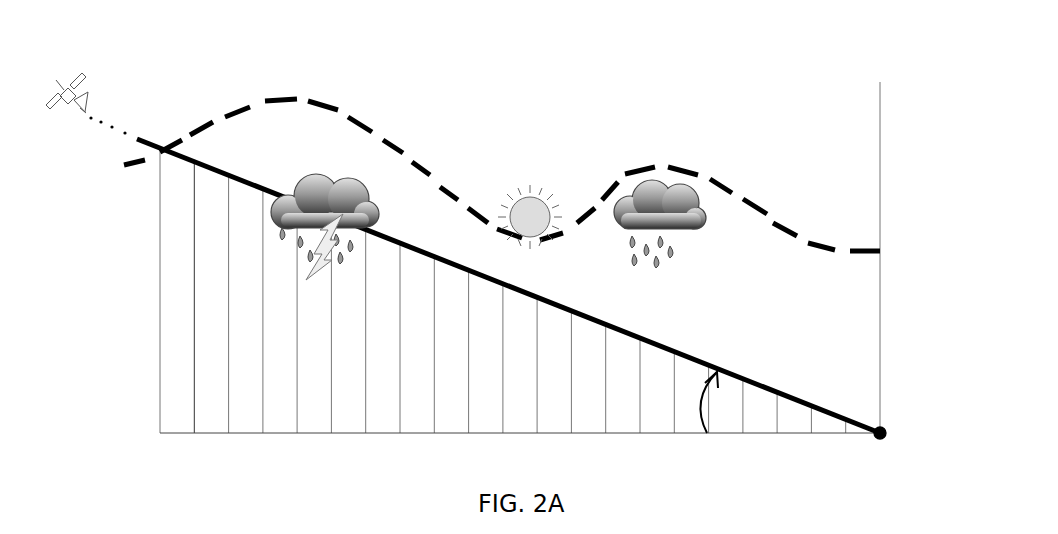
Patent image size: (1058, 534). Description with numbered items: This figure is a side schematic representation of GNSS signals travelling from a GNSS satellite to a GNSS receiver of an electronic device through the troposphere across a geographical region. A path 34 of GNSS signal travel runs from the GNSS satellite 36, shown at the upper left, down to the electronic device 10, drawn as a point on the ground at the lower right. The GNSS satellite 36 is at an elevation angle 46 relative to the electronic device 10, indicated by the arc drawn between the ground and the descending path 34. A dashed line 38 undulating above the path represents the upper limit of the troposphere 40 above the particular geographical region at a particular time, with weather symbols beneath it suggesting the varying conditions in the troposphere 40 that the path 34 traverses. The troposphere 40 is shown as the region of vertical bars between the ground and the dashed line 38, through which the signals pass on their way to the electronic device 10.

The electronic device 10 is at (885, 428).
The path 34 is at (782, 390).
The GNSS satellite 36 is at (56, 112).
The dashed line 38 is at (310, 97).
The troposphere 40 is at (247, 381).
The elevation angle 46 is at (695, 408).